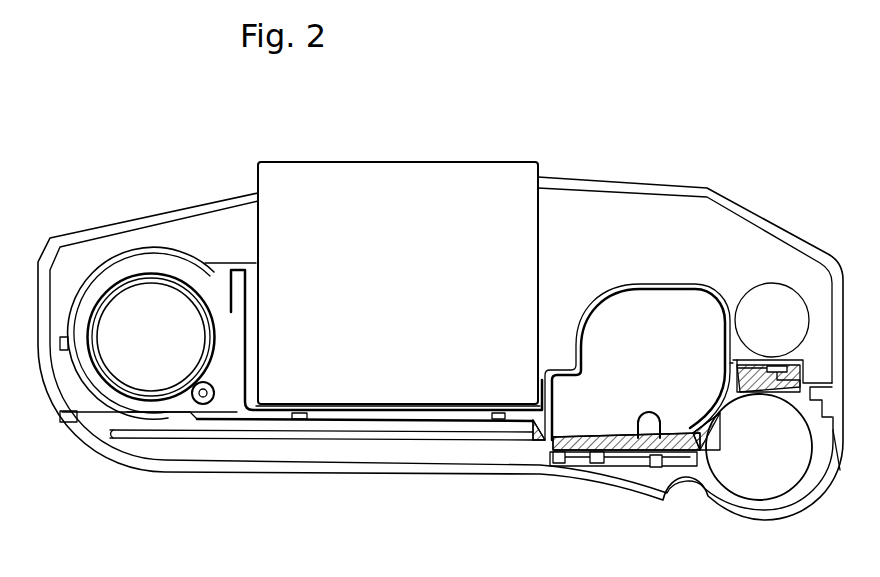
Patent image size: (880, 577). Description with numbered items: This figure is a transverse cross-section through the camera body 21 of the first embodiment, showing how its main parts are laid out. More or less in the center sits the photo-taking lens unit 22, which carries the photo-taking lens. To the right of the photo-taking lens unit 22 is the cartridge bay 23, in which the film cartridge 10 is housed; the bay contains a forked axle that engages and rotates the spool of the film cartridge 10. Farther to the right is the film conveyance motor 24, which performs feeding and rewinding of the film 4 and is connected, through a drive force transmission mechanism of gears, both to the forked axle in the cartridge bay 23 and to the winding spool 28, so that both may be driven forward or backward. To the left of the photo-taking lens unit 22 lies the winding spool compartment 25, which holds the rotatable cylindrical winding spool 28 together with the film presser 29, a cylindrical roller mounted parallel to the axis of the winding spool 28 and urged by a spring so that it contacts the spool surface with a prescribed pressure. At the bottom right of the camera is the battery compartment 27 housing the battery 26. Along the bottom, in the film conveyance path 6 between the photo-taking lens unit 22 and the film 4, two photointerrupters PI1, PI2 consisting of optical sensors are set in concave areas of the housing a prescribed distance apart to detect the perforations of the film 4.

The film 4 is at (193, 419).
The film conveyance path 6 is at (430, 420).
The film cartridge 10 is at (673, 310).
The camera body 21 is at (729, 191).
The photo-taking lens unit 22 is at (453, 160).
The cartridge bay 23 is at (635, 290).
The film conveyance motor 24 is at (763, 303).
The winding spool compartment 25 is at (143, 250).
The battery 26 is at (763, 480).
The battery compartment 27 is at (836, 455).
The winding spool 28 is at (185, 285).
The film presser 29 is at (200, 385).
The photointerrupter PI1 is at (498, 412).
The photointerrupter PI2 is at (300, 412).